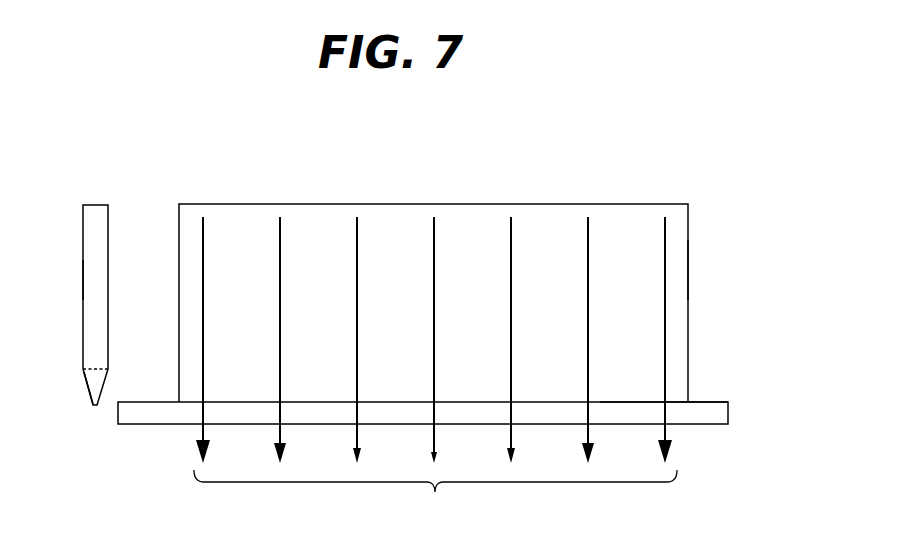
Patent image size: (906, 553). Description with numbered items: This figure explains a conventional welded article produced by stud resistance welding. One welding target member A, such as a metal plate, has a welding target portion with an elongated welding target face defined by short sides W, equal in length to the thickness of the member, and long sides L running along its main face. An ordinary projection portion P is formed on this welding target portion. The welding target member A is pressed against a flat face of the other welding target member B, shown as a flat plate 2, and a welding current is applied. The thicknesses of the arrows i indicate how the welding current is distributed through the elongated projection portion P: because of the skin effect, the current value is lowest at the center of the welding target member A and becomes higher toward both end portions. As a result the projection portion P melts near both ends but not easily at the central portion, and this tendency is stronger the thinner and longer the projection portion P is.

The short sides W is at (93, 205).
The projection portion P is at (87, 383).
The welding target member A is at (83, 275).
The long sides L is at (335, 204).
The substrate 2 is at (133, 435).
The other welding target member B is at (738, 407).
The arrows i is at (435, 369).